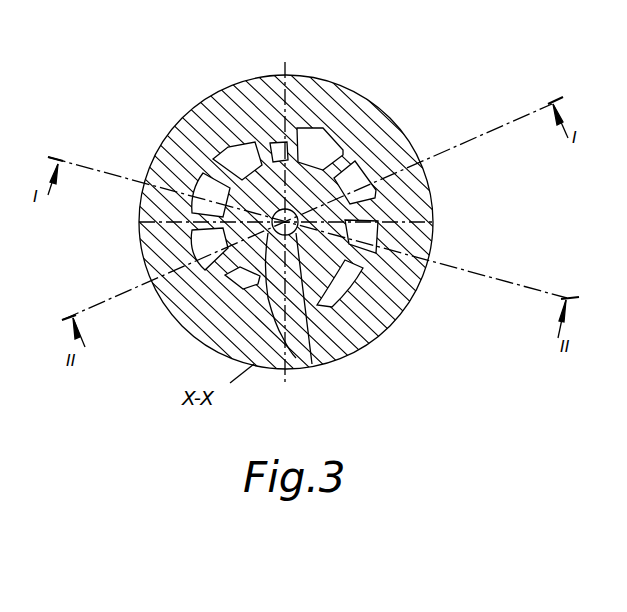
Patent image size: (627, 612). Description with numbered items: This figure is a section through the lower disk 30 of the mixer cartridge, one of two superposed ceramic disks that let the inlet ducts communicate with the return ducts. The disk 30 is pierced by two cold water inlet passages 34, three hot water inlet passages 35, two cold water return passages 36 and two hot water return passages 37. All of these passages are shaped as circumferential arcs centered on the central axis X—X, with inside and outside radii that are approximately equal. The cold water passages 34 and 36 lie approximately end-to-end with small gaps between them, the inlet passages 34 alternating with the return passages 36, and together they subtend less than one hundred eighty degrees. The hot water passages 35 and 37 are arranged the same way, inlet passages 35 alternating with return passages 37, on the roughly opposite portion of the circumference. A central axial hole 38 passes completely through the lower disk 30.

The lower disk 30 is at (157, 148).
The cold water inlet passage 34 is at (378, 188).
The hot water inlet passage 35 is at (280, 146).
The cold water return passage 36 is at (324, 147).
The hot water return passage 37 is at (244, 143).
The central axial hole 38 is at (311, 364).